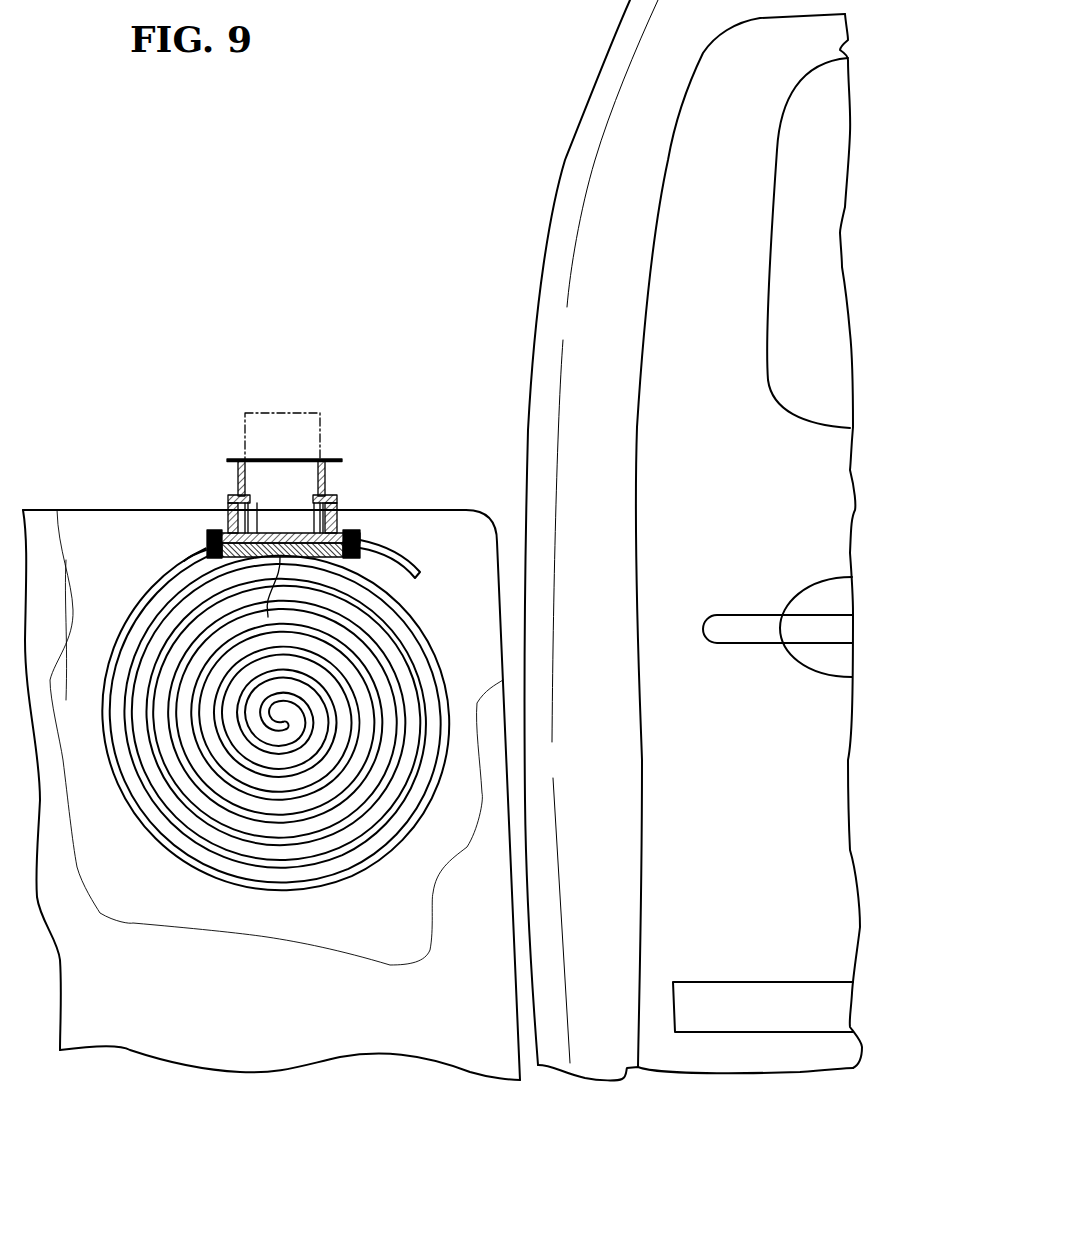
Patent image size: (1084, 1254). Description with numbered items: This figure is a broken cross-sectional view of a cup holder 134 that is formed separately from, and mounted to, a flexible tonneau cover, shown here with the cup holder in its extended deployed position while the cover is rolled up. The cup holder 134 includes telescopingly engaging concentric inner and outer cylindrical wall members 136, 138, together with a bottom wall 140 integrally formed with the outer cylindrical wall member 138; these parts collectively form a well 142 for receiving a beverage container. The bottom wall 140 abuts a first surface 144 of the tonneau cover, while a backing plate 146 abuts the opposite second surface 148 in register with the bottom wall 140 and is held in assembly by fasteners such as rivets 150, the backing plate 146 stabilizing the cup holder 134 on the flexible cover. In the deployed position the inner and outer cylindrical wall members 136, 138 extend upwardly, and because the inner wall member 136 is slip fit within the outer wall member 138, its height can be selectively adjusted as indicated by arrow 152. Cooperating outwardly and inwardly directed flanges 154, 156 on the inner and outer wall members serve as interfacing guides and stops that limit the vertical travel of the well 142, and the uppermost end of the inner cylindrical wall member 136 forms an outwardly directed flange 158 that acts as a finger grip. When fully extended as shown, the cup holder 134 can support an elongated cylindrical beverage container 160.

The cup holder 134 is at (362, 446).
The inner cylindrical wall member 136 is at (327, 477).
The outer cylindrical wall member 138 is at (336, 525).
The bottom wall 140 is at (272, 531).
The well 142 is at (281, 454).
The first surface 144 is at (175, 558).
The backing plate 146 is at (303, 630).
The second surface 148 is at (150, 592).
The rivets 150 is at (216, 532).
The arrow 152 is at (197, 479).
The outwardly directed flange 154 is at (229, 511).
The inwardly directed flange 156 is at (232, 496).
The outwardly directed flange 158 is at (233, 494).
The elongated cylindrical beverage container 160 is at (288, 413).